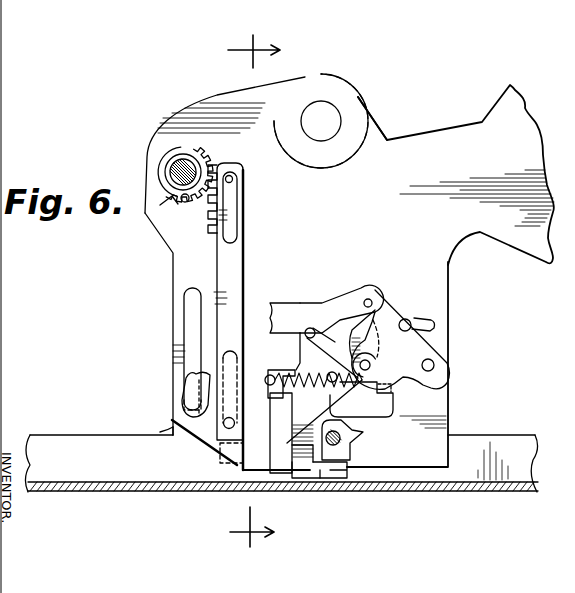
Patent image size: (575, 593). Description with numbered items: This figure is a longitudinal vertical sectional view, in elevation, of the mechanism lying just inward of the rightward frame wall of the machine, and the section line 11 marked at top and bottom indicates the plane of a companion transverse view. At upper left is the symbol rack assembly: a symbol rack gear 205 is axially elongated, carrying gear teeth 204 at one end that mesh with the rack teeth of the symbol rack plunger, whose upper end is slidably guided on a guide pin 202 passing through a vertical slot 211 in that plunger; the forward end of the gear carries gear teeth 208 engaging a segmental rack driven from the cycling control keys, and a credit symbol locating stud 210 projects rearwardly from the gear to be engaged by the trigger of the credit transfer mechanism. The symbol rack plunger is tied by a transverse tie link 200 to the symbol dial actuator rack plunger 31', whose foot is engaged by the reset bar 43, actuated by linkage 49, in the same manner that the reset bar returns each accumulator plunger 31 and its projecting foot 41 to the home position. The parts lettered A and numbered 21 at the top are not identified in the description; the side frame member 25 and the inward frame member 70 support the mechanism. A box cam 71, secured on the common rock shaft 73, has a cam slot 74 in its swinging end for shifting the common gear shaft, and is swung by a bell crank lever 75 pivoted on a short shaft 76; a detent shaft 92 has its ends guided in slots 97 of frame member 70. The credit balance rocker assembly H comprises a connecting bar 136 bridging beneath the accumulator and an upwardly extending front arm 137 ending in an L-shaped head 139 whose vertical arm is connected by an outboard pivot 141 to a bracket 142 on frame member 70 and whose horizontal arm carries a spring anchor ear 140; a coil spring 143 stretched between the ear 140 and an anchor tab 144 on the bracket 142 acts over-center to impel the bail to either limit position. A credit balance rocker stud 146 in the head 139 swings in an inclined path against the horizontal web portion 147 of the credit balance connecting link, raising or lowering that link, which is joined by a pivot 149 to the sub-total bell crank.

The section line 11- 11 is at (257, 293).
The roller A is at (366, 96).
The roller pivot arm 21 is at (380, 126).
The side frame member 25 is at (492, 160).
The symbol rack gear 205 is at (162, 160).
The gear teeth 204 is at (212, 162).
The guide pin 202 is at (233, 181).
The vertical slot 211 is at (237, 214).
The gear teeth 208 is at (160, 206).
The credit symbol locating stud 210 is at (185, 203).
The actuator plunger 31 is at (248, 320).
The symbol dial actuator rack plunger 31' is at (206, 453).
The transverse tie link 200 is at (206, 441).
The projecting foot 41 is at (137, 441).
The transverse bar 43 is at (178, 402).
The linkage 49 is at (188, 394).
The side frame member 70 is at (449, 273).
The cam slot 74 is at (369, 299).
The horizontal web portion 147 is at (325, 302).
The credit balance rocker stud 146 is at (285, 308).
The box cam 71 is at (400, 333).
The shaft 92 is at (418, 317).
The slots 97 is at (434, 326).
The pivot 149 is at (371, 363).
The common rock shaft 73 is at (436, 366).
The upwardly projecting head 139 is at (300, 348).
The anchor tab 144 is at (292, 372).
The coil spring 143 is at (318, 390).
The outboard pivot 141 is at (338, 388).
The spring anchor ear 140 is at (394, 404).
The short shaft 76 is at (352, 446).
The bracket 142 is at (290, 448).
The upwardly extending arm 137 is at (300, 472).
The credit balance rocker assembly H is at (320, 482).
The connecting bar 136 is at (341, 480).
The bell crank lever 75 is at (376, 476).